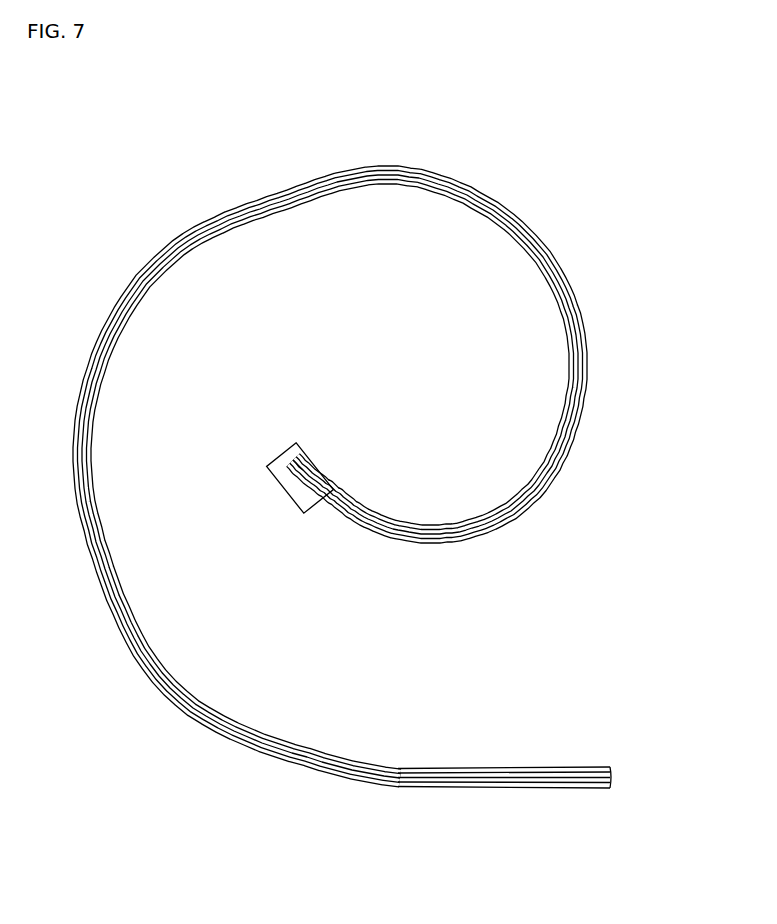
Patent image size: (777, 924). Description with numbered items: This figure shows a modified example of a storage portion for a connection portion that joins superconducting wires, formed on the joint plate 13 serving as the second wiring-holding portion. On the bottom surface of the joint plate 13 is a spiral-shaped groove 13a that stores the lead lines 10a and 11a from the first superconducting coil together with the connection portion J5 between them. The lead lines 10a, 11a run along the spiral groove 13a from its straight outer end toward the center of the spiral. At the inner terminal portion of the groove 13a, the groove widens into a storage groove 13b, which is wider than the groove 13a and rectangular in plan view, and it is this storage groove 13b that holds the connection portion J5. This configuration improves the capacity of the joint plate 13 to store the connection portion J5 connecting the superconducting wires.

The joint plate 13 is at (416, 699).
The groove 13a is at (372, 774).
The storage groove 13b is at (310, 470).
The lead line 10a is at (440, 524).
The lead line 11a is at (420, 544).
The connection portion J5 is at (283, 486).